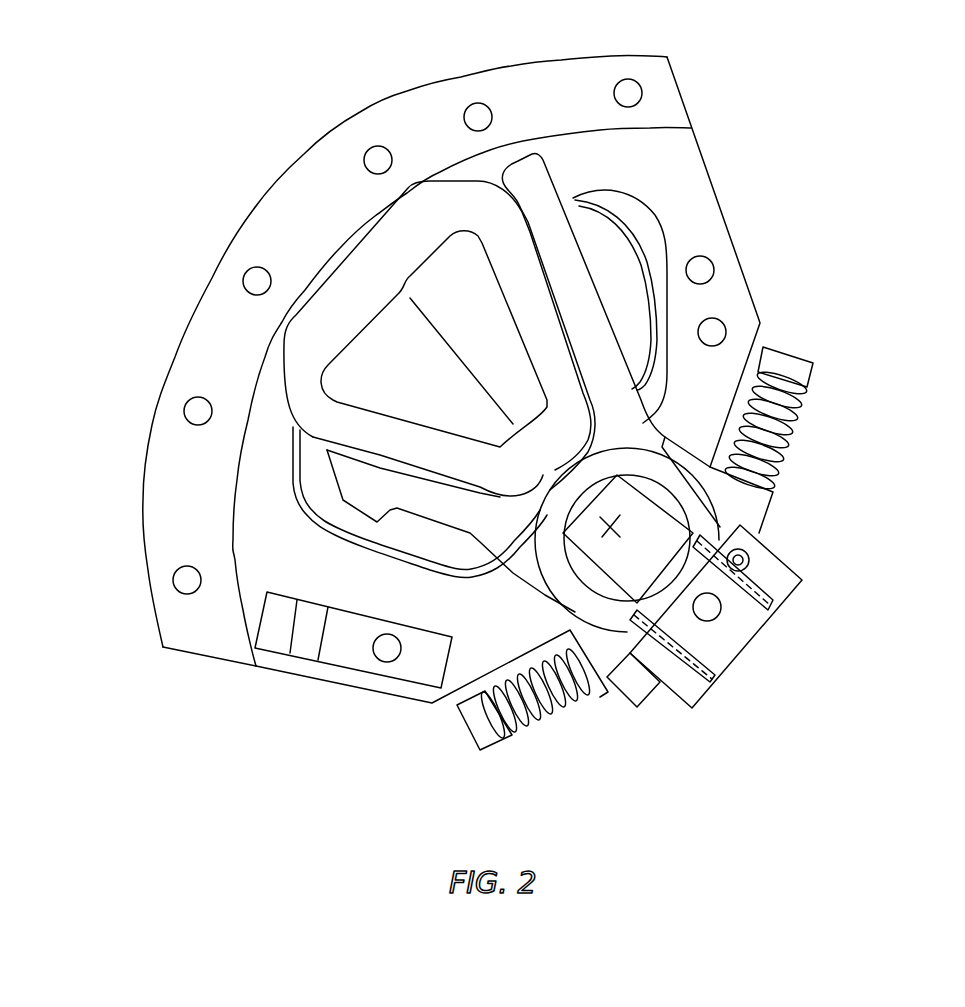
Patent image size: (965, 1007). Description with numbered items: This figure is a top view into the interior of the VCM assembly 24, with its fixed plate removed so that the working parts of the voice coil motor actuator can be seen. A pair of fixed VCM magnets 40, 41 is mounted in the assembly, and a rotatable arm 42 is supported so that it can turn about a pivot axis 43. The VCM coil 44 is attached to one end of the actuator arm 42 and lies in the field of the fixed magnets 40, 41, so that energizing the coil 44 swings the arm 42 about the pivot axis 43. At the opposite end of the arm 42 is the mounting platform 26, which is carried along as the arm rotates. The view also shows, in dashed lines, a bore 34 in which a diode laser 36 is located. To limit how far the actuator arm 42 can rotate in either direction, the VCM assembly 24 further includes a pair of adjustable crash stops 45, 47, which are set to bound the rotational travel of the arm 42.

The VCM assembly 24 is at (508, 393).
The mounting platform 26 is at (783, 633).
The bore 34 is at (685, 650).
The diode laser 36 is at (745, 607).
The fixed VCM magnet 40 is at (322, 482).
The fixed VCM magnet 41 is at (687, 182).
The rotatable arm 42 is at (633, 423).
The pivot axis 43 is at (614, 527).
The VCM coil 44 is at (430, 210).
The adjustable crash stop 45 is at (487, 726).
The adjustable crash stop 47 is at (787, 362).